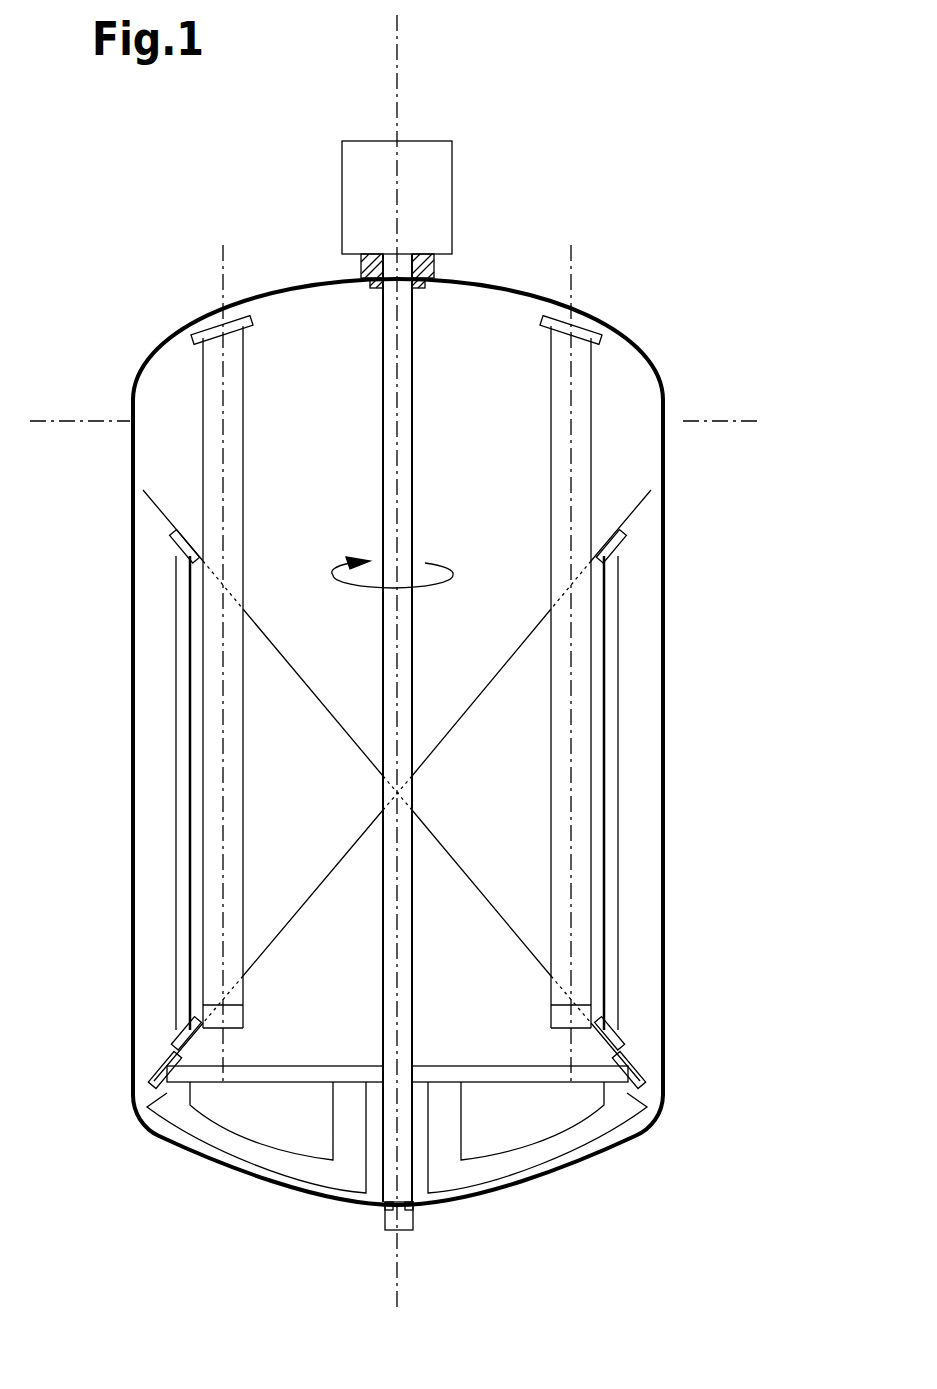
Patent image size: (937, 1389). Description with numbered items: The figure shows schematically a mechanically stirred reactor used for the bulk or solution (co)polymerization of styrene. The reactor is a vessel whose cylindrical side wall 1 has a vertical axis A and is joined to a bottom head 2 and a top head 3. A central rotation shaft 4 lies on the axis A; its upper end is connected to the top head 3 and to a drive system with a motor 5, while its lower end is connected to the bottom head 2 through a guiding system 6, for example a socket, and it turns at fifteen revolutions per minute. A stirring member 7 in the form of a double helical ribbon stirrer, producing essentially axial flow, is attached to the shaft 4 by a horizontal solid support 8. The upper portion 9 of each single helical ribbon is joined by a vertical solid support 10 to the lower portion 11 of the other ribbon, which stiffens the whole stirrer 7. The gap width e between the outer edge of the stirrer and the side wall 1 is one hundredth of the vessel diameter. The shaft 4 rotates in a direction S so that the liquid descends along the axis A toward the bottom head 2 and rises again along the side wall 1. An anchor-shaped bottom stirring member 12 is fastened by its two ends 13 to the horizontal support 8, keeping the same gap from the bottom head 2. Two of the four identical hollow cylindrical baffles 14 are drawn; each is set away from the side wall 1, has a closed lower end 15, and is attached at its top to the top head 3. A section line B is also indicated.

The side wall 1 is at (665, 730).
The bottom head 2 is at (520, 1200).
The top head 3 is at (497, 288).
The central rotation shaft 4 is at (385, 420).
The motor 5 is at (366, 186).
The guiding system 6 is at (414, 1226).
The stirring member 7 is at (490, 682).
The horizontal solid support 8 is at (322, 1066).
The upper portion 9 is at (181, 560).
The vertical solid support 10 is at (180, 755).
The lower portion 11 is at (186, 1030).
The bottom stirring member 12 is at (270, 1165).
The ends 13 is at (158, 1135).
The baffle 14 is at (216, 870).
The closed lower end 15 is at (232, 1030).
The vertical axis A is at (400, 58).
The section line B is at (50, 405).
The rotation direction S is at (358, 590).
The stirring member/vessel gap width e is at (143, 492).